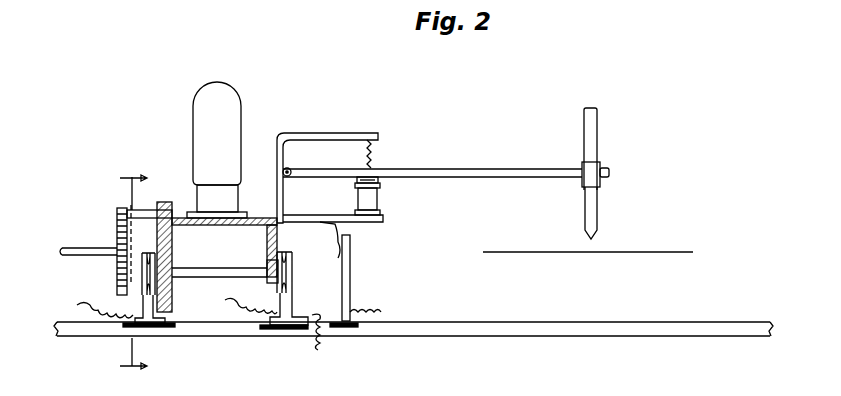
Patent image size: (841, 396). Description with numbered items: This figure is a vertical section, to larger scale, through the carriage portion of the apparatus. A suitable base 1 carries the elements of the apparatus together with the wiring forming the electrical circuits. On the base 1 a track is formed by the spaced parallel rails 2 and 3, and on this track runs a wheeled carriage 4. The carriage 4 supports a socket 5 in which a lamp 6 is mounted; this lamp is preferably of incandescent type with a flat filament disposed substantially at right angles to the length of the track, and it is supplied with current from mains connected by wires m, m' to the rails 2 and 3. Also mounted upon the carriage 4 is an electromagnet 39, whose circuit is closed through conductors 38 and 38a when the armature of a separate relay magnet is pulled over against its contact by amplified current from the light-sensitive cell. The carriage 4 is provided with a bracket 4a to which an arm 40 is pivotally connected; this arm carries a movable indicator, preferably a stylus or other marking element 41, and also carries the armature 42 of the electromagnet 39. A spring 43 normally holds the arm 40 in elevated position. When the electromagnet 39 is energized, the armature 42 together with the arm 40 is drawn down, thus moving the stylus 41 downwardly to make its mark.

The base 1 is at (598, 322).
The rail 2 is at (290, 308).
The rail 3 is at (140, 304).
The wheeled carriage 4 is at (263, 212).
The bracket 4a is at (341, 127).
The socket 5 is at (205, 197).
The lamp 6 is at (193, 122).
The conductor 38 is at (318, 346).
The conductor 38a is at (380, 312).
The electromagnet 39 is at (378, 205).
The arm 40 is at (340, 178).
The stylus 41 is at (592, 226).
The armature 42 is at (378, 180).
The spring 43 is at (368, 158).
The wire m is at (90, 303).
The wire m' is at (249, 298).